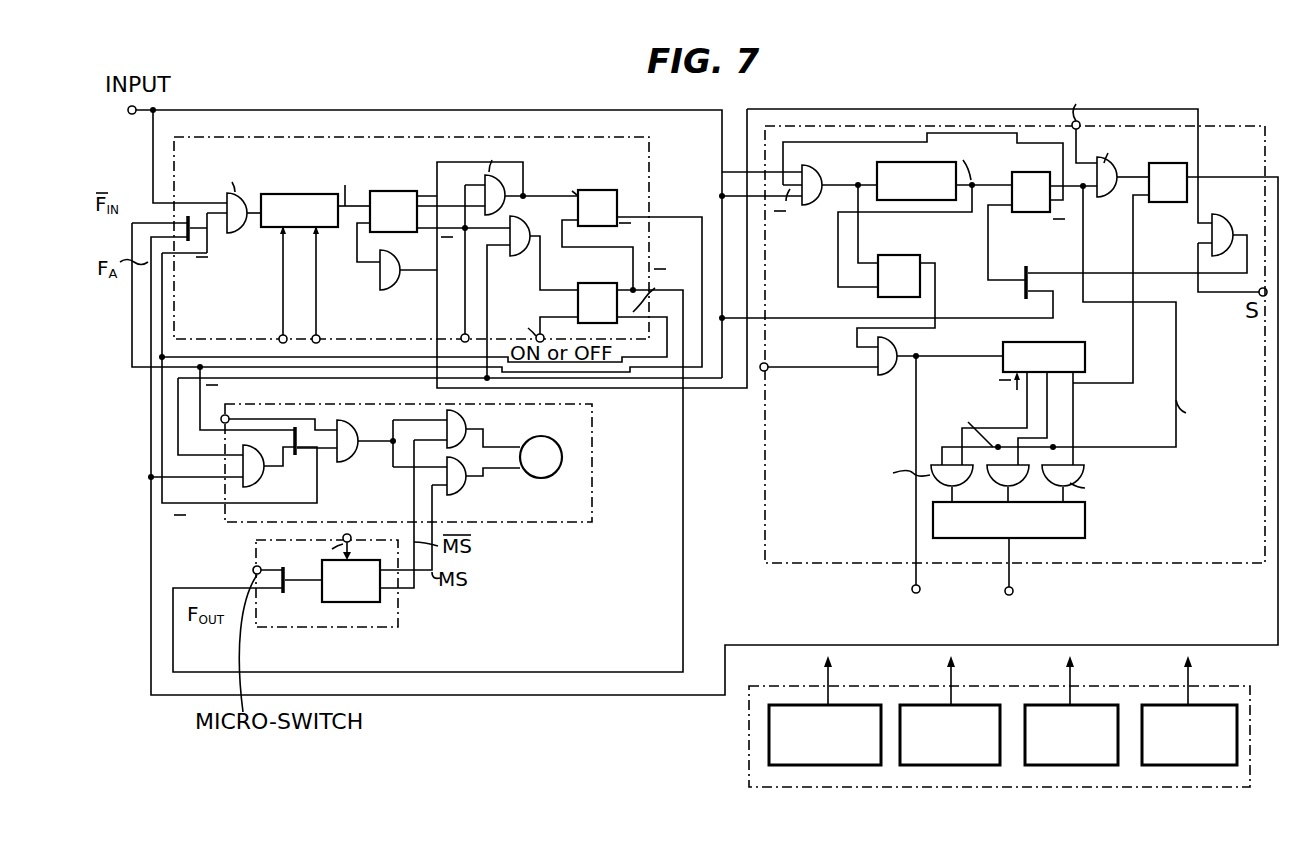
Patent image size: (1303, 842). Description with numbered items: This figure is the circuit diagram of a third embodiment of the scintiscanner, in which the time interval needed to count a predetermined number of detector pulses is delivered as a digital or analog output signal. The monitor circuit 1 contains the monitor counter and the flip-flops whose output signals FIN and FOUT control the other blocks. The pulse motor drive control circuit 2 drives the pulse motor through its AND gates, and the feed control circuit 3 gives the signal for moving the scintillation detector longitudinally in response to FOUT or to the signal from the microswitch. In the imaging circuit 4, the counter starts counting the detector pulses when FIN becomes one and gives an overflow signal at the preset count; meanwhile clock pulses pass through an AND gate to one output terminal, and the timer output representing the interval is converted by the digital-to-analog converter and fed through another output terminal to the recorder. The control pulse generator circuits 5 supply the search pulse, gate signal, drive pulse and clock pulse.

The monitor circuit 1 is at (450, 137).
The pulse motor drive control circuit 2 is at (537, 522).
The feed control circuit 3 is at (327, 628).
The imaging circuit 4 is at (958, 123).
The control pulse generator circuits 5 is at (749, 762).